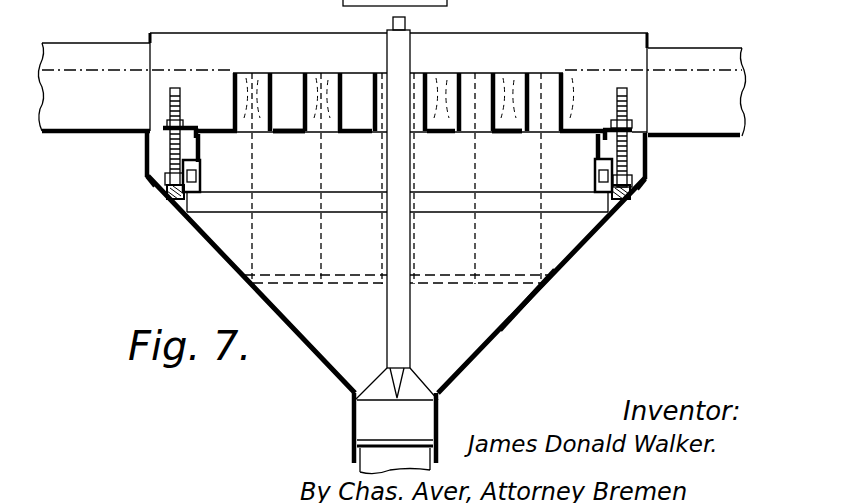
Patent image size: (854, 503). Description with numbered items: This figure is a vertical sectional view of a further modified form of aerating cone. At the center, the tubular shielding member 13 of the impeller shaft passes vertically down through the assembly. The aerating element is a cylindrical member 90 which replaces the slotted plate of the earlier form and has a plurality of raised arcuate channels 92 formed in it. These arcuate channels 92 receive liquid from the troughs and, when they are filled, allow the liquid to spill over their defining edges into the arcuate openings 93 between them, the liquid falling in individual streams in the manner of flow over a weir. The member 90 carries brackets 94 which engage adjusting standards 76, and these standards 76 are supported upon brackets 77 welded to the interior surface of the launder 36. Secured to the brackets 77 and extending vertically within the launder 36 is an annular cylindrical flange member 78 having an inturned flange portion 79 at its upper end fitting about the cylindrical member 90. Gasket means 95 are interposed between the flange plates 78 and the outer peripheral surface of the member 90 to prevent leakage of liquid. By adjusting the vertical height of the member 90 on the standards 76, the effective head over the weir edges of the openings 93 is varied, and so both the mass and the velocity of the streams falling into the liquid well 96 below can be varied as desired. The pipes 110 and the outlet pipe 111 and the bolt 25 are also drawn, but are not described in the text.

The tubular shielding member 13 is at (397, 253).
The bolt 25 is at (620, 97).
The launder 36 is at (222, 248).
The adjusting standards 76 is at (180, 103).
The brackets 77 is at (155, 188).
The annular cylindrical flange member 78 is at (177, 203).
The inturned flange portion 79 is at (193, 153).
The cylindrical member 90 is at (297, 185).
The raised arcuate channels 92 is at (353, 83).
The openings 93 is at (253, 133).
The brackets 94 is at (187, 126).
The gasket means 95 is at (196, 176).
The liquid well 96 is at (490, 318).
The pipe 110 is at (92, 123).
The outlet pipe 111 is at (367, 457).